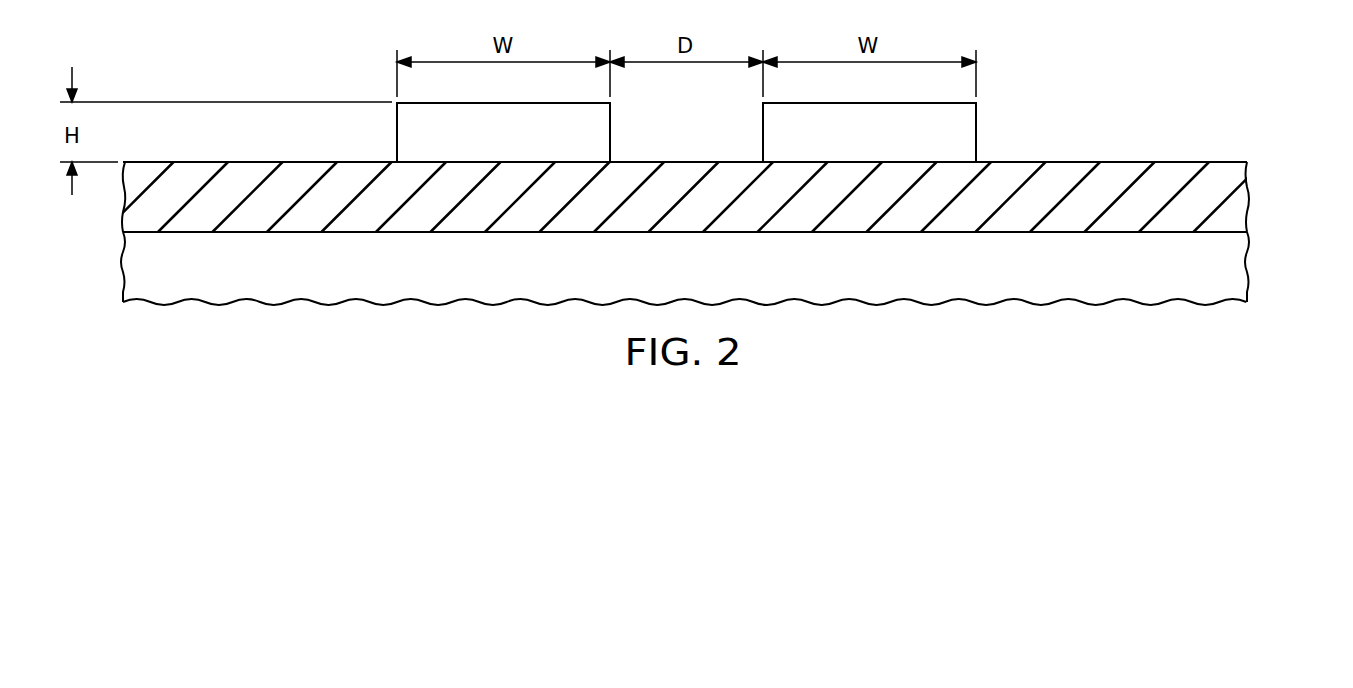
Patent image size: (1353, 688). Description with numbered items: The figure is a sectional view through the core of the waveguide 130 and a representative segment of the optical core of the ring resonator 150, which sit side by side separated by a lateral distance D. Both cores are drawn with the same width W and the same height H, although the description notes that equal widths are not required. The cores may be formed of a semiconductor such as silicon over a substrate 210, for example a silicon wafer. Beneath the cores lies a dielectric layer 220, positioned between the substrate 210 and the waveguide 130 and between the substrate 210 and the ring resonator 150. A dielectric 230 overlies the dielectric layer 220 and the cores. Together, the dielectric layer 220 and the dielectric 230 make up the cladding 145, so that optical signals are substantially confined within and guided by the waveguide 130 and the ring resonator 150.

The waveguide 130 is at (846, 148).
The cladding 145 is at (1260, 105).
The ring resonator 150 is at (481, 148).
The substrate 210 is at (665, 285).
The dielectric layer 220 is at (687, 172).
The dielectric 230 is at (1113, 95).